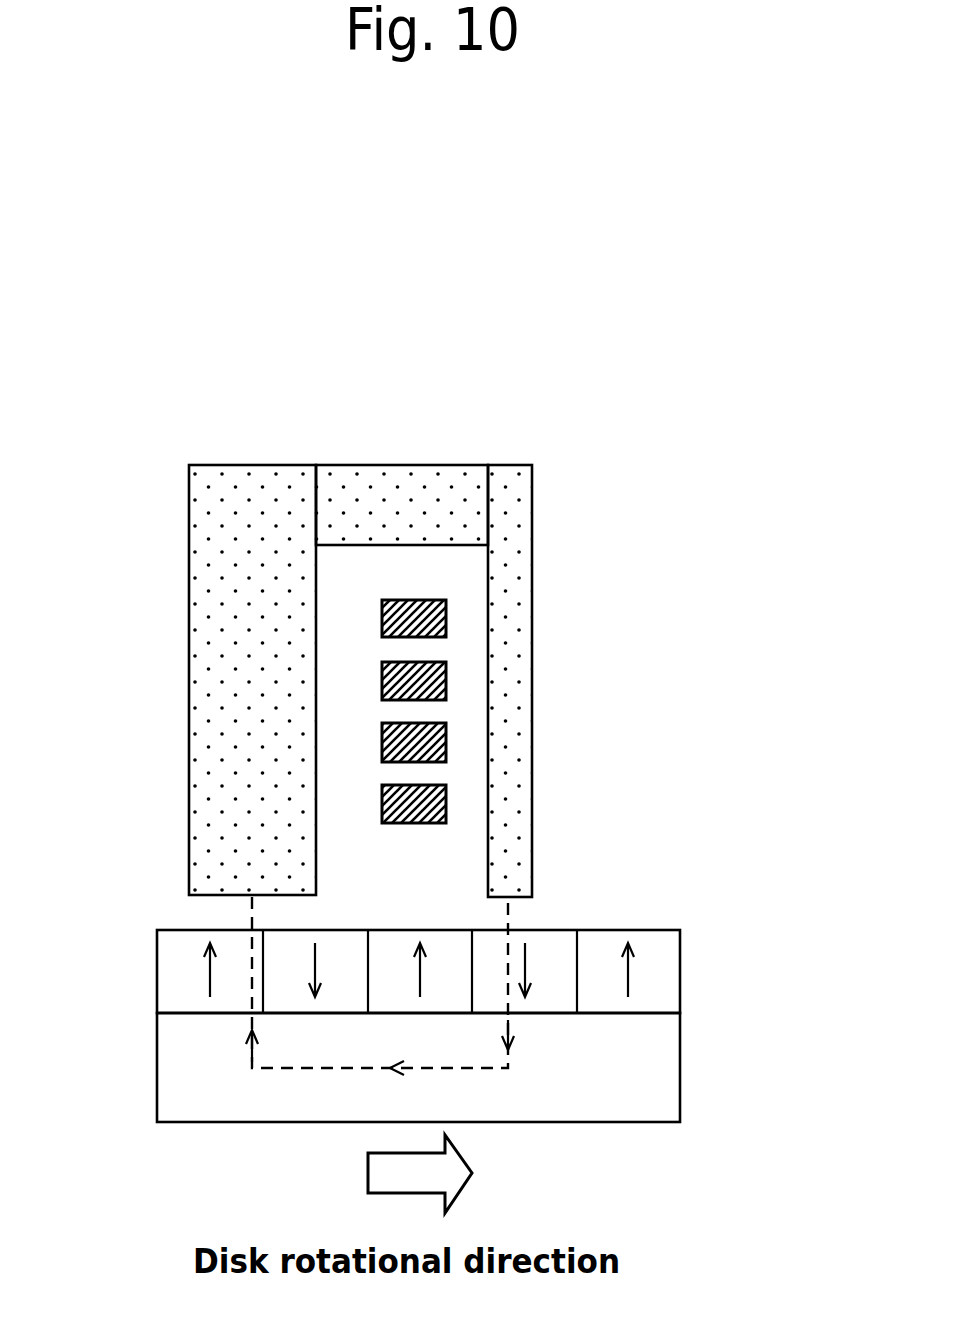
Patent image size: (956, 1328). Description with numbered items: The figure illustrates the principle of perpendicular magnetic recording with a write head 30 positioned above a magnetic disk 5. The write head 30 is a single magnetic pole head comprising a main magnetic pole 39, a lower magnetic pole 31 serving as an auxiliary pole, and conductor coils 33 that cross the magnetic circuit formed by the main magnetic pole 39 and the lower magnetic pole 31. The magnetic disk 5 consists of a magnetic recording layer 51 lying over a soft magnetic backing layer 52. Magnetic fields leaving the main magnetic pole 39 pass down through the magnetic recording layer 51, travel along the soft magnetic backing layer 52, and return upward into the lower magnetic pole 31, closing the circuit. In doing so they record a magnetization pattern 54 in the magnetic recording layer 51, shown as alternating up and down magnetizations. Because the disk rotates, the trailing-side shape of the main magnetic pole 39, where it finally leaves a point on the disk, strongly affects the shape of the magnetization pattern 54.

The write head 30 is at (451, 631).
The lower magnetic pole 31 is at (250, 488).
The conductor coils 33 is at (446, 617).
The main magnetic pole 39 is at (517, 805).
The magnetic disk 5 is at (434, 992).
The magnetic recording layer 51 is at (665, 972).
The soft magnetic backing layer 52 is at (665, 1070).
The magnetization pattern 54 is at (630, 960).